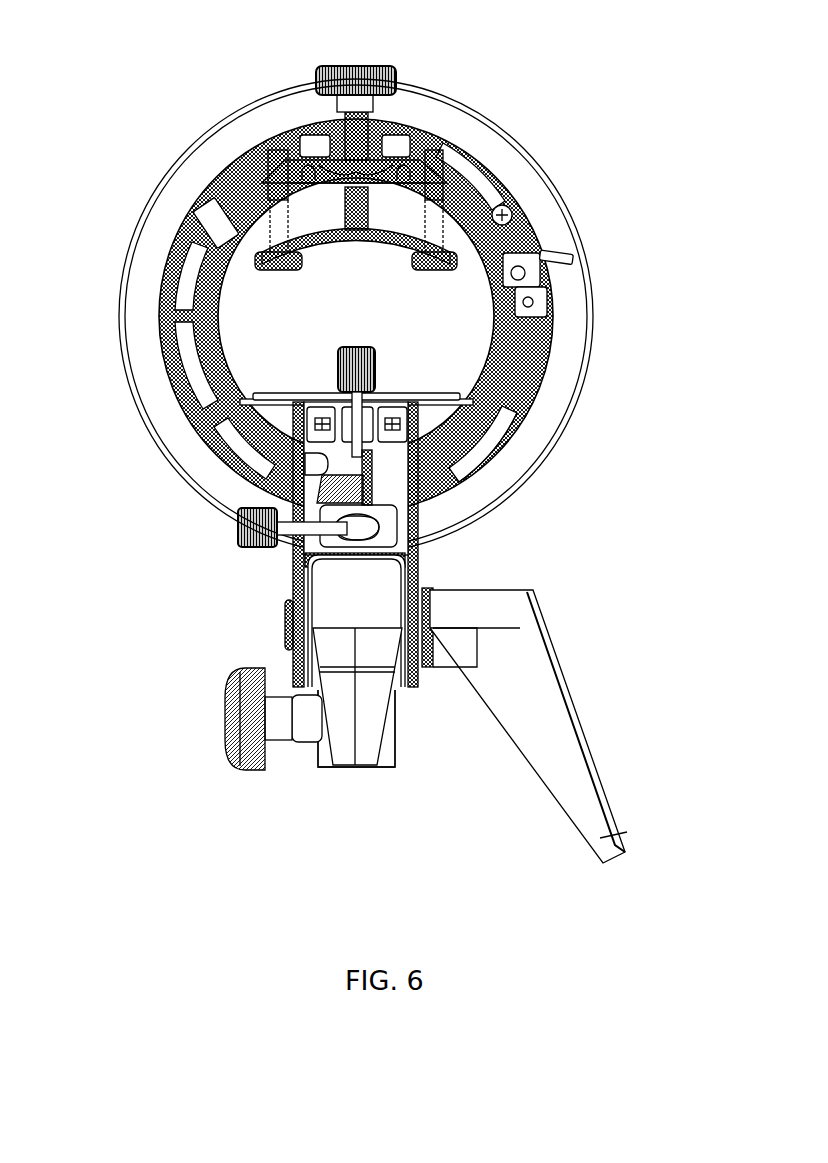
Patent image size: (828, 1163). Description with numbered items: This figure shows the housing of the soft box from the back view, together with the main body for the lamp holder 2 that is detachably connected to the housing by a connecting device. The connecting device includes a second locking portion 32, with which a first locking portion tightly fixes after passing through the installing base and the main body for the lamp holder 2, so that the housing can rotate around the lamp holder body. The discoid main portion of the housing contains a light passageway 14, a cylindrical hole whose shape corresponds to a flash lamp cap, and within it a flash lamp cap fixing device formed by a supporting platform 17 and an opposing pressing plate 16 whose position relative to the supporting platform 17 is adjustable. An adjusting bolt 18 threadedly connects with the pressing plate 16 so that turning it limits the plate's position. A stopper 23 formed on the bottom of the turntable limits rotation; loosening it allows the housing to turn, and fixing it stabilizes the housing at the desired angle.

The main body for a lamp holder 2 is at (363, 742).
The light passageway 14 is at (252, 317).
The pressing plate 16 is at (287, 257).
The supporting platform 17 is at (478, 443).
The adjusting bolt 18 is at (373, 64).
The stopper 23 is at (245, 720).
The second locking portion 32 is at (545, 690).